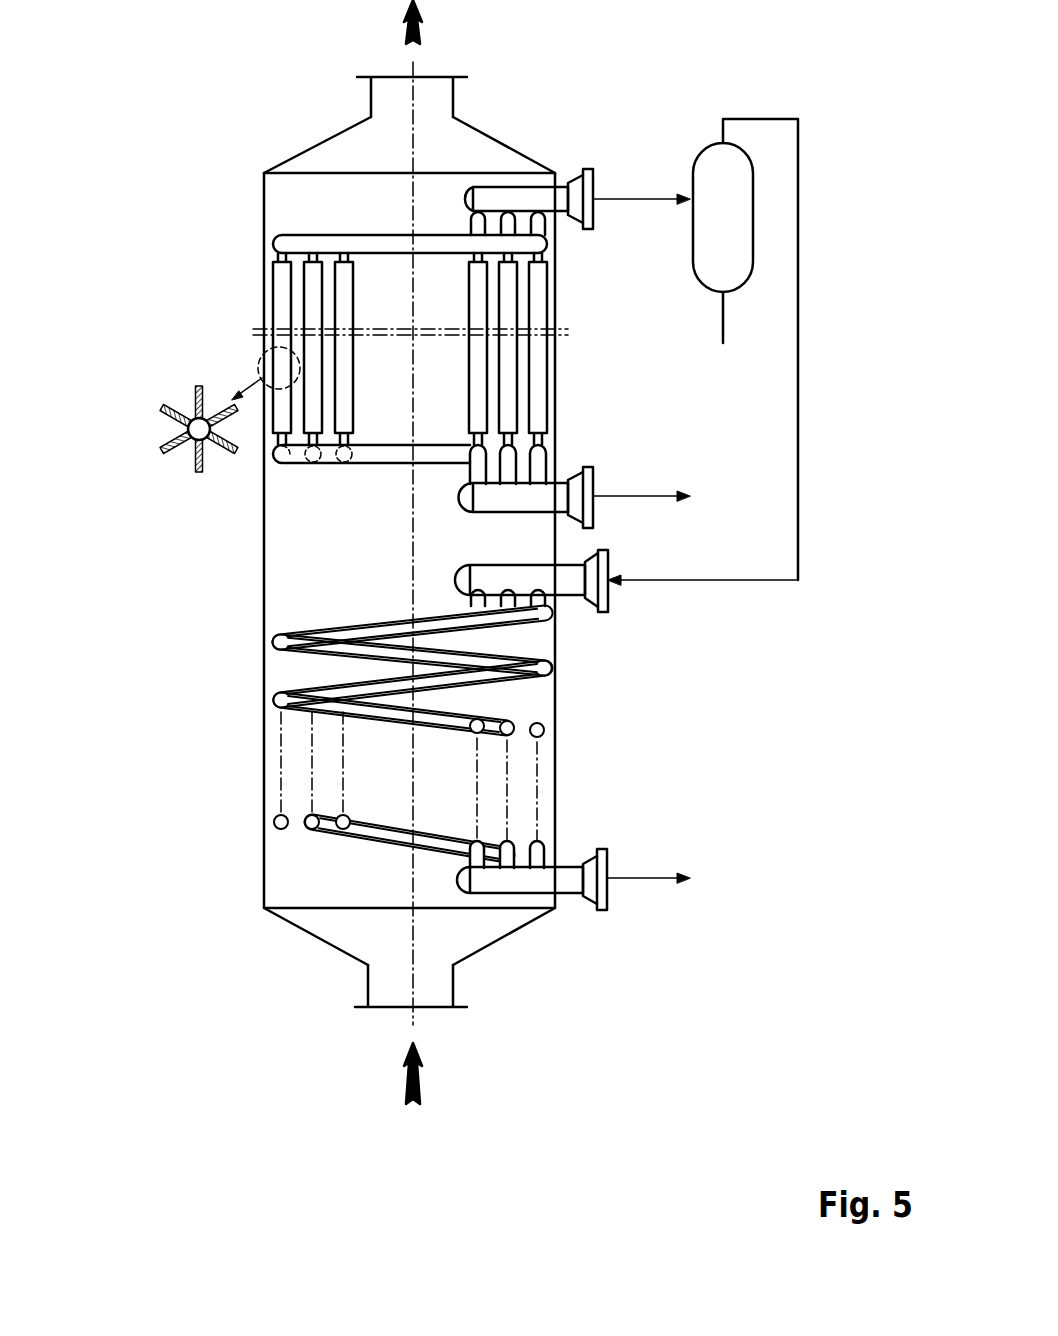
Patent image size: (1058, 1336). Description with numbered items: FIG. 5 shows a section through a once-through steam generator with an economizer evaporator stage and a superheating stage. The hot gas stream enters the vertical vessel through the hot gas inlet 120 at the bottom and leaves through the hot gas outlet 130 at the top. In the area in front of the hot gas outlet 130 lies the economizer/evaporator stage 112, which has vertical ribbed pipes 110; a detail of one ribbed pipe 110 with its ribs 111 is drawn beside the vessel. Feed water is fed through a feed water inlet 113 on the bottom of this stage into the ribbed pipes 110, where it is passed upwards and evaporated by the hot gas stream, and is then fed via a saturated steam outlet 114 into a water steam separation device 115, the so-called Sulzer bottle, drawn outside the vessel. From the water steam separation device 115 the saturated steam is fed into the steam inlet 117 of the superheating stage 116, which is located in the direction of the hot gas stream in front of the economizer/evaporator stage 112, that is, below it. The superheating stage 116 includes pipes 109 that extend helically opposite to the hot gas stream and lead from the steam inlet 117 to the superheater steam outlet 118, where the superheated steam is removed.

The pipes 109 is at (508, 673).
The vertical ribbed pipes 110 is at (190, 443).
The fin 111 is at (195, 397).
The economizer/evaporator stage 112 is at (243, 298).
The feed water inlet 113 is at (588, 482).
The saturated steam outlet 114 is at (588, 185).
The water steam separation device 115 is at (723, 228).
The superheating stage 116 is at (490, 736).
The steam inlet 117 is at (602, 598).
The superheater steam outlet 118 is at (602, 893).
The hot gas inlet 120 is at (390, 990).
The hot gas outlet 130 is at (390, 97).